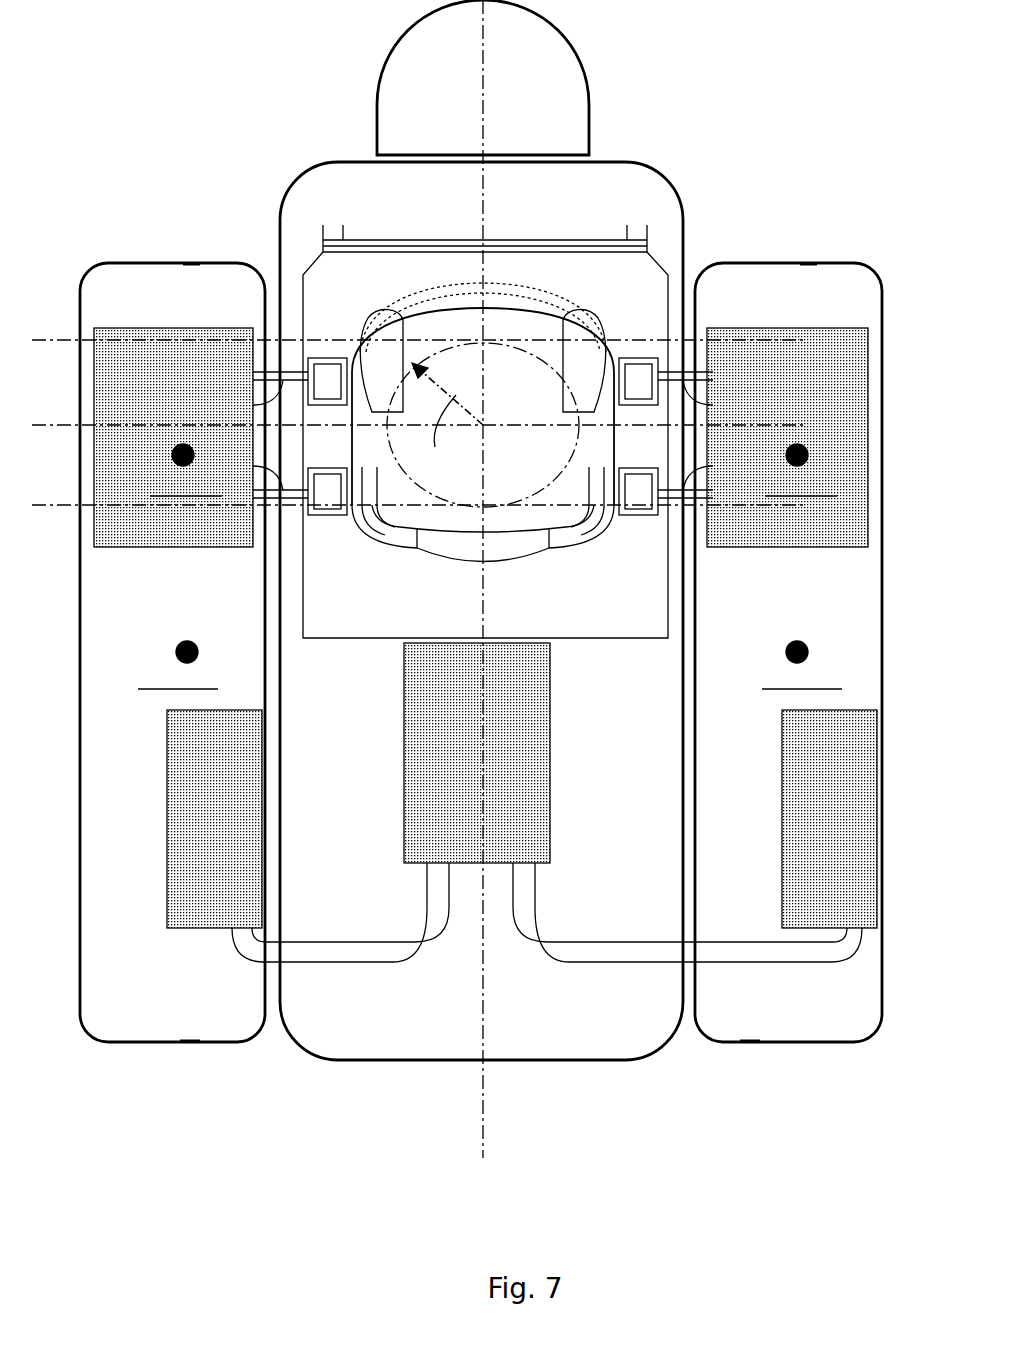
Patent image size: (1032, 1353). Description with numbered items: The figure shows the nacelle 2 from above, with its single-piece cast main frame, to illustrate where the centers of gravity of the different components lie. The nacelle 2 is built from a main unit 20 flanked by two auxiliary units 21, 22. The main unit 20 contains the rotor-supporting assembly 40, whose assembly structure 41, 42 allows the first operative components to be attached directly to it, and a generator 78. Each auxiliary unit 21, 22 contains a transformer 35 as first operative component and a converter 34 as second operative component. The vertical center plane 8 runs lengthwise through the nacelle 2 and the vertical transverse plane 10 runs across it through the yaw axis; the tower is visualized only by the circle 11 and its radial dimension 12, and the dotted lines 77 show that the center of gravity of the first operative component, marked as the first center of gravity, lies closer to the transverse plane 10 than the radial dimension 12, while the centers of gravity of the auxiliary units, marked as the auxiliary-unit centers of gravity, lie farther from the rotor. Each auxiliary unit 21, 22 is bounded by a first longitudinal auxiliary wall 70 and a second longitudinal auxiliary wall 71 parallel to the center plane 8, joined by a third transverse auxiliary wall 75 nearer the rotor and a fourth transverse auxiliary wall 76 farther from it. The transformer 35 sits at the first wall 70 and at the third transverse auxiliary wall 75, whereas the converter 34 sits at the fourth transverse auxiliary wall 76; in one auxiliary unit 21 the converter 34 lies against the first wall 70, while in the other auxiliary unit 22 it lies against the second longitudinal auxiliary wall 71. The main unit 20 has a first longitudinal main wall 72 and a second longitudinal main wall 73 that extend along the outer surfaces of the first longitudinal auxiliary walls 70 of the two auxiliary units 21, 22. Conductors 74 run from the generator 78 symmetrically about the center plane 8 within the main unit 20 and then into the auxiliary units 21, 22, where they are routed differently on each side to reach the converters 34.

The nacelle 2 is at (672, 114).
The vertical center plane 8 is at (484, 1118).
The vertical transverse plane 10 is at (75, 466).
The circle 11 is at (570, 393).
The radial dimension 12 is at (447, 420).
The main unit 20 is at (388, 1030).
The auxiliary unit 21 is at (128, 1028).
The auxiliary unit 22 is at (868, 1040).
The converter 34 is at (200, 847).
The transformer 35 is at (200, 409).
The rotor-supporting assembly 40 is at (457, 240).
The assembly structure 41 is at (700, 378).
The assembly structure 42 is at (265, 372).
The first longitudinal auxiliary wall 70 is at (266, 600).
The second longitudinal auxiliary wall 71 is at (84, 622).
The first longitudinal main wall 72 is at (283, 695).
The second longitudinal main wall 73 is at (686, 676).
The conductors 74 is at (233, 946).
The third transverse auxiliary wall 75 is at (183, 262).
The fourth transverse auxiliary wall 76 is at (187, 1043).
The dotted lines 77 is at (75, 381).
The generator 78 is at (545, 775).